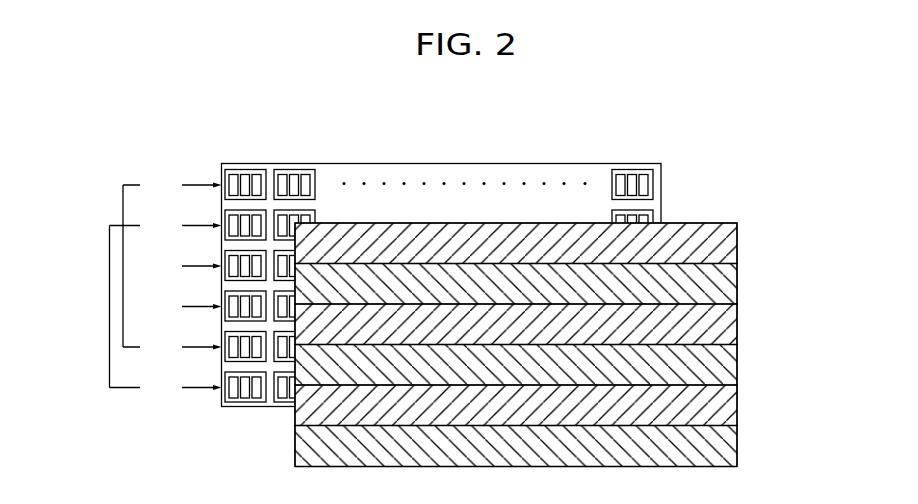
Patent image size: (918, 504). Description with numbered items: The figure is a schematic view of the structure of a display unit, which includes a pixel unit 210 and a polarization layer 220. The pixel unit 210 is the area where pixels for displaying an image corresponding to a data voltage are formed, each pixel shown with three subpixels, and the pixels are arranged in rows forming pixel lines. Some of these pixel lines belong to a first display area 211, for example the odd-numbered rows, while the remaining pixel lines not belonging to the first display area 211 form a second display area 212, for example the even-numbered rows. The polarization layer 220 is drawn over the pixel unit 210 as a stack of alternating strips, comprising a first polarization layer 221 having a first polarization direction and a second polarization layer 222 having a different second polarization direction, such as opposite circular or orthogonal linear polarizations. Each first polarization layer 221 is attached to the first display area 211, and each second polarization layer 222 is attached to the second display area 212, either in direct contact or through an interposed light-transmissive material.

The pixel unit 210 is at (440, 164).
The first display area 211 is at (140, 266).
The second display area 212 is at (140, 306).
The polarization layer 220 is at (583, 345).
The first polarization layer 221 is at (551, 324).
The second polarization layer 222 is at (814, 446).